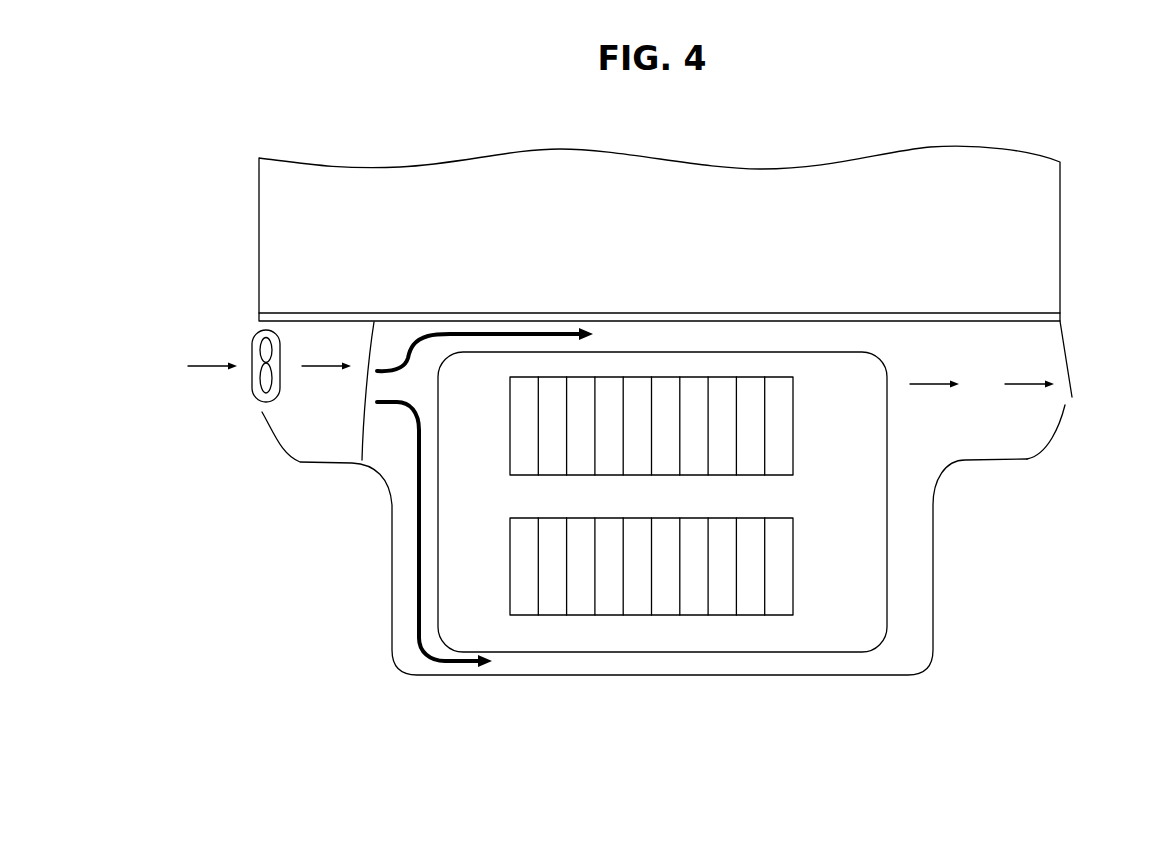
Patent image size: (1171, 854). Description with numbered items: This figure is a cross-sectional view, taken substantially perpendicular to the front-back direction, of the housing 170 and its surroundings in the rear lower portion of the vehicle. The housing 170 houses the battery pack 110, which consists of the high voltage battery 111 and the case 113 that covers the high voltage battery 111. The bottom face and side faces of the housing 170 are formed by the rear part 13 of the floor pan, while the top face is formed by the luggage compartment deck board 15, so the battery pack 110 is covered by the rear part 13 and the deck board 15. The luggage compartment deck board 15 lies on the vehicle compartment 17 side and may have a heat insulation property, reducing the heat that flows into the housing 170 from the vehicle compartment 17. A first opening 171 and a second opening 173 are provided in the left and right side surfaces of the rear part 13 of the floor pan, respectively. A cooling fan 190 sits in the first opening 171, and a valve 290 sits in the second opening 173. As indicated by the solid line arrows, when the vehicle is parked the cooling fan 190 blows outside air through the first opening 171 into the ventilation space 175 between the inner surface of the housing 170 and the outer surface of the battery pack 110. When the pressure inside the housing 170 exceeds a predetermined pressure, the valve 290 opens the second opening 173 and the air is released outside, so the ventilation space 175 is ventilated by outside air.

The vehicle compartment 17 is at (1035, 235).
The ventilation space 175 is at (943, 335).
The valve 290 is at (1068, 358).
The second opening 173 is at (1072, 407).
The first opening 171 is at (255, 332).
The cooling fan 190 is at (252, 392).
The housing 170 is at (631, 498).
The luggage compartment deck board 15 is at (362, 460).
The rear part of floor pan 13 is at (392, 577).
The battery pack 110 is at (662, 555).
The case 113 is at (583, 657).
The high voltage battery 111 is at (637, 617).